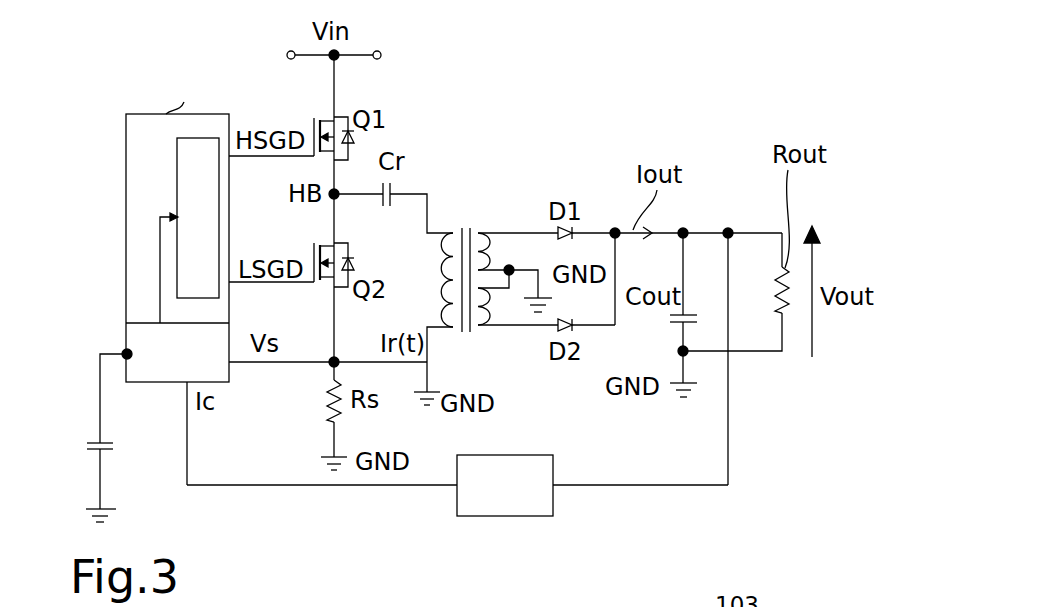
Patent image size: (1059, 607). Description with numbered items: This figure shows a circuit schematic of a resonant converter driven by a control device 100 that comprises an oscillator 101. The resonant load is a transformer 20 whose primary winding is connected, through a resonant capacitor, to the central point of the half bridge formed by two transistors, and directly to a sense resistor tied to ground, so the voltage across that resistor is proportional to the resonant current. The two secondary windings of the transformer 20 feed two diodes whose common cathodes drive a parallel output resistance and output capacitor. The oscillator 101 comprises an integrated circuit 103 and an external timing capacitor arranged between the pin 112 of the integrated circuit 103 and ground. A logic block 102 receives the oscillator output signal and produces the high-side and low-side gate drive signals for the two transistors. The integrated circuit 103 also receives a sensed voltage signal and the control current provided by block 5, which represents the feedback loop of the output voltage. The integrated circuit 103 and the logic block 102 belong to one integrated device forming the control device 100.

The control device 100 is at (120, 144).
The oscillator 101 is at (94, 348).
The logic block 102 is at (188, 194).
The integrated circuit 103 is at (208, 360).
The pin 112 is at (124, 353).
The transformer 20 is at (470, 208).
The block 5 is at (510, 516).